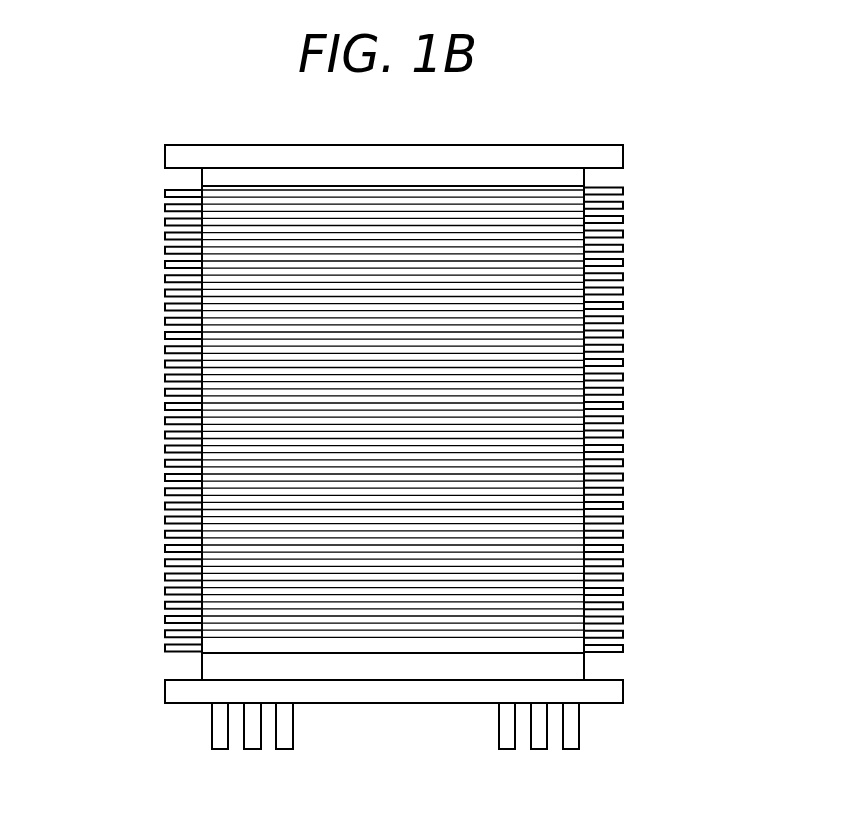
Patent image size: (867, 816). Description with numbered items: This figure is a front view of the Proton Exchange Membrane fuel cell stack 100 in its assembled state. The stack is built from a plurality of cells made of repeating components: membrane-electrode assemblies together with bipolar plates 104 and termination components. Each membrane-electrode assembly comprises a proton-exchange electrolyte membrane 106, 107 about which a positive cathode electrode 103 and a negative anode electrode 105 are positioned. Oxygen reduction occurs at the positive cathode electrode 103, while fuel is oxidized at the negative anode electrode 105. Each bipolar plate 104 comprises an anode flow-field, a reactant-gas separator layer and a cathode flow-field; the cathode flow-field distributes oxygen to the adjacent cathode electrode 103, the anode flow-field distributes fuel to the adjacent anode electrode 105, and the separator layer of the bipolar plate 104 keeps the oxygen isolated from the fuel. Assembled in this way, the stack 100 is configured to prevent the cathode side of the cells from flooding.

The PEM fuel cell stack 100 is at (660, 232).
The positive cathode electrode 103 is at (200, 670).
The bipolar plate 104 is at (630, 563).
The negative anode electrode 105 is at (200, 180).
The electrolyte membrane 106 is at (308, 419).
The electrolyte membrane 107 is at (237, 508).